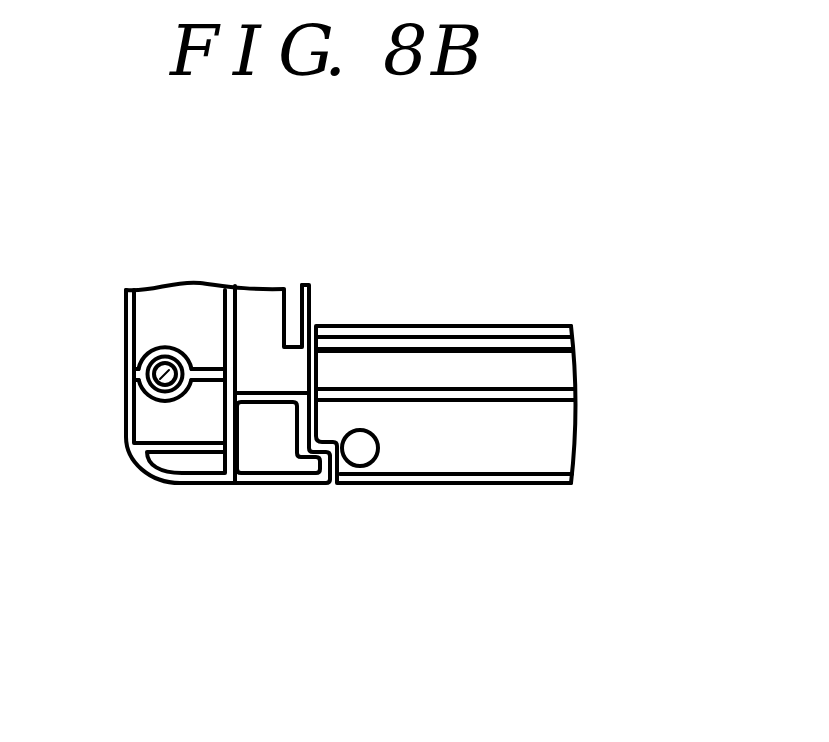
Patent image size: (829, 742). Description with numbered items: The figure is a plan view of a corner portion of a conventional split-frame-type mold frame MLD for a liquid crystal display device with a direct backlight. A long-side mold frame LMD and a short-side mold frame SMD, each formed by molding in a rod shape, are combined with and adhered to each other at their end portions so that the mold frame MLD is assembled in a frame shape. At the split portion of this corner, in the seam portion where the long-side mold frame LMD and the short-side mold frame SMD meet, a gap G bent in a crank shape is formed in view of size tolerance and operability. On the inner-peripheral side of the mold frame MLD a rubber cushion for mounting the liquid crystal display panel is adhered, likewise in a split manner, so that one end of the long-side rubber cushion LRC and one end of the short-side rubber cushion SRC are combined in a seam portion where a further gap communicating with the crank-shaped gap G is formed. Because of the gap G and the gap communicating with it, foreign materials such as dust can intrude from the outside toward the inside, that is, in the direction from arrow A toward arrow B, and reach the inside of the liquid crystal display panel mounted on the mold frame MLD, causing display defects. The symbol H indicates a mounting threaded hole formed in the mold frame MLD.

The short-side mold frame SMD is at (162, 290).
The mounting threaded hole H is at (150, 397).
The short-side rubber cushion SRC is at (297, 286).
The arrow B is at (313, 312).
The mold frame MLD is at (432, 323).
The long-side rubber cushion LRC is at (563, 338).
The long-side mold frame LMD is at (557, 442).
The gap G is at (315, 372).
The arrow A is at (333, 492).